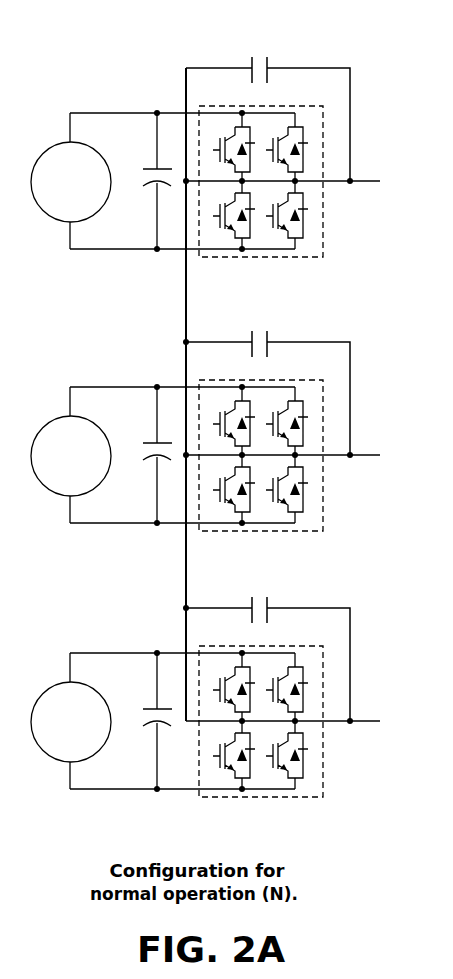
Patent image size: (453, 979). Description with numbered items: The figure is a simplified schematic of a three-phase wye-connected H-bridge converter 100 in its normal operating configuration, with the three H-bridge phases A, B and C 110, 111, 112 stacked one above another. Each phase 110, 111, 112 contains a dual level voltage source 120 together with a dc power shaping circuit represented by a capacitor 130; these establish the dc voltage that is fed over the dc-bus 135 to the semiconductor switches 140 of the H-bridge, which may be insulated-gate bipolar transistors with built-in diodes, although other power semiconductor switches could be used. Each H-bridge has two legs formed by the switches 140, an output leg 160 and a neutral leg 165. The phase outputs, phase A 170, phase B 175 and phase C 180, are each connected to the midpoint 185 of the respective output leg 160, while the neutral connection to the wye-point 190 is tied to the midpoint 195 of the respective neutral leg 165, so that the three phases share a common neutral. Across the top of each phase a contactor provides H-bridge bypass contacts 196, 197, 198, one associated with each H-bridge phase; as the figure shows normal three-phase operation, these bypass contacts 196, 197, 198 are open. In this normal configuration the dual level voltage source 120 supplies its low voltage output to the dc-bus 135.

The H-bridge converter 100 is at (417, 60).
The phase A 110 is at (324, 248).
The phase B 111 is at (327, 385).
The phase C 112 is at (327, 650).
The dual level voltage source 120 is at (42, 150).
The capacitor 130 is at (148, 167).
The dc-bus 135 is at (172, 112).
The semiconductor switches 140 is at (232, 138).
The output leg 160 is at (318, 154).
The neutral leg 165 is at (146, 806).
The phase A output 170 is at (368, 180).
The phase B output 175 is at (368, 455).
The phase C output 180 is at (368, 720).
The midpoint of output bridge leg 185 is at (297, 183).
The wye-point 190 is at (184, 608).
The midpoint of neutral leg 195 is at (242, 182).
The H-bridge bypass contact 196 is at (262, 62).
The H-bridge bypass contact 197 is at (266, 336).
The H-bridge bypass contact 198 is at (266, 602).